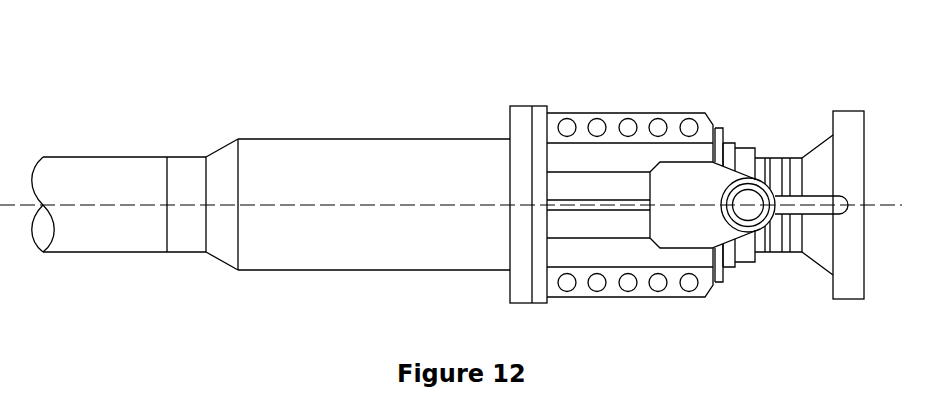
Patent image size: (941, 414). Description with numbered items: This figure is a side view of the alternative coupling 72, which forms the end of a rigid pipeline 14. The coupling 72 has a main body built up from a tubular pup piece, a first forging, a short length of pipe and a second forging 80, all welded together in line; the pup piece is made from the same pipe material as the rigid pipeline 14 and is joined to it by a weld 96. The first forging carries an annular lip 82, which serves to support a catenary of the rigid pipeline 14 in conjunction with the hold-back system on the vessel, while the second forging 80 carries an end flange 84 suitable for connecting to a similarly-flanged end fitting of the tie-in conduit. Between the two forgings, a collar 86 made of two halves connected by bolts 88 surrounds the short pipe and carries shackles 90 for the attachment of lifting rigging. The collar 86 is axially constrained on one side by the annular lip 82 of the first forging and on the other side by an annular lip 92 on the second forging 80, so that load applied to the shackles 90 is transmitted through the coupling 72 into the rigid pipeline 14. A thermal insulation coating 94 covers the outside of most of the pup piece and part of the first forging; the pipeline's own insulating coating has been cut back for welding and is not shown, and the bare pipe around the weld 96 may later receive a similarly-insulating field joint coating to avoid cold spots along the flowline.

The rigid pipeline 14 is at (106, 172).
The coupling 72 is at (746, 78).
The second forging 80 is at (818, 248).
The annular lip 82 is at (518, 288).
The end flange 84 is at (853, 267).
The collar 86 is at (643, 292).
The bolts 88 is at (655, 118).
The shackles 90 is at (818, 200).
The annular lip 92 is at (725, 278).
The thermal insulation coating 94 is at (320, 258).
The weld 96 is at (167, 238).